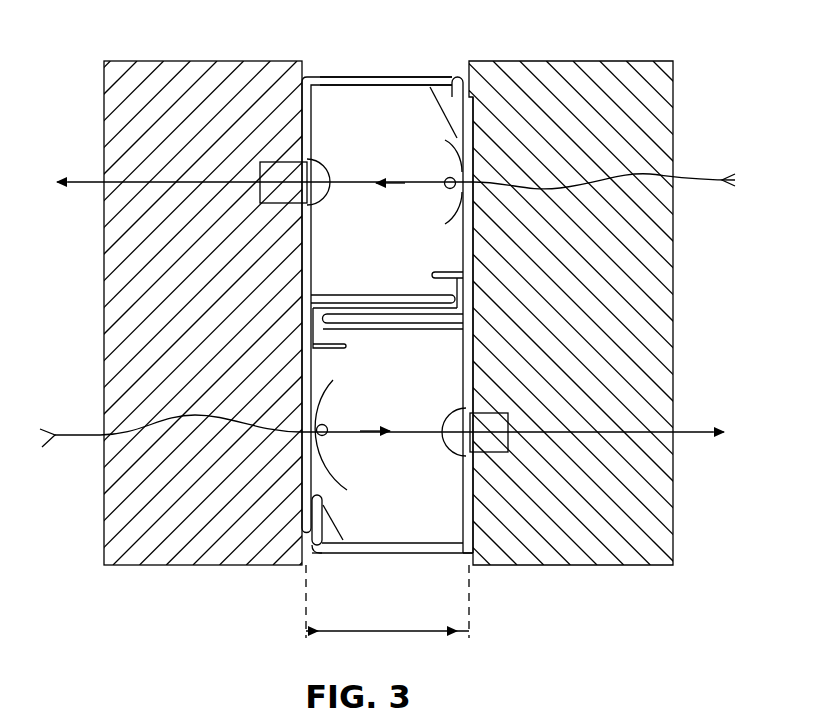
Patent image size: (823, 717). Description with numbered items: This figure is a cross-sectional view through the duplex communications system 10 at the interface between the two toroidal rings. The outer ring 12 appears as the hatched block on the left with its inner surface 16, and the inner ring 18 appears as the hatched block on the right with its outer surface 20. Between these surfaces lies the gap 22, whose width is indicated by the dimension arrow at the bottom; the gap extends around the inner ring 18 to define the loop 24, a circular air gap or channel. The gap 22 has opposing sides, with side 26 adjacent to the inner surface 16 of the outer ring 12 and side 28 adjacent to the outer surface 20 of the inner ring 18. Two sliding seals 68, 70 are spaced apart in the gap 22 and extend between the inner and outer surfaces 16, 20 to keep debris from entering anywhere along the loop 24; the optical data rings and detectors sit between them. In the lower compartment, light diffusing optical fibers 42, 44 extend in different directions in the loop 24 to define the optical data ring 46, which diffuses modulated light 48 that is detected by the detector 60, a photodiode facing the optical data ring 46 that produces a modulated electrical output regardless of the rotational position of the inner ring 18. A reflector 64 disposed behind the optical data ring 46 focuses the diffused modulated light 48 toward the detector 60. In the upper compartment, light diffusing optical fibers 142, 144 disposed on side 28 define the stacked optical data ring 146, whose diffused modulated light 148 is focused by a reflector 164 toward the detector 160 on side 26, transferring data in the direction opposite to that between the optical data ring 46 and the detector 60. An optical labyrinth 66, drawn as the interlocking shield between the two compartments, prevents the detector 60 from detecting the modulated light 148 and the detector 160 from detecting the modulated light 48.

The communications system 10 is at (616, 44).
The outer ring 12 is at (110, 261).
The inner ring 18 is at (662, 325).
The inner surface 16 is at (312, 562).
The outer surface 20 is at (467, 560).
The gap 22 is at (388, 632).
The loop 24 is at (381, 320).
The side of the gap 26 is at (323, 73).
The side of the gap 28 is at (465, 78).
The sliding seal 70 is at (362, 75).
The sliding seal 68 is at (400, 560).
The optical labyrinth 66 is at (425, 330).
The light diffusing optical fiber 42 is at (65, 433).
The light diffusing optical fiber 44 is at (70, 435).
The optical data ring 46 is at (322, 424).
The modulated light 48 is at (370, 436).
The detector 60 is at (455, 448).
The reflector 64 is at (337, 462).
The light diffusing optical fiber 142 is at (707, 180).
The light diffusing optical fiber 144 is at (709, 179).
The optical data ring 146 is at (444, 183).
The modulated light 148 is at (390, 180).
The detector 160 is at (323, 176).
The reflector 164 is at (494, 80).